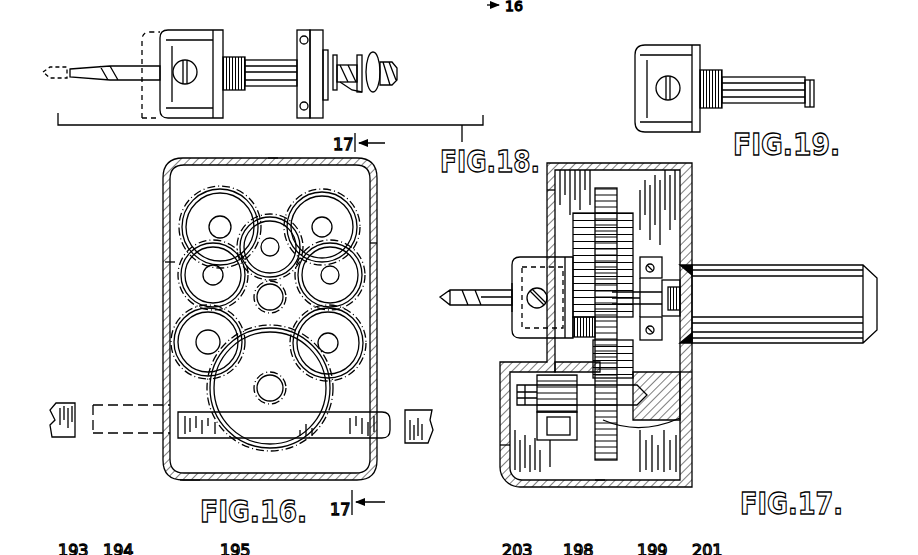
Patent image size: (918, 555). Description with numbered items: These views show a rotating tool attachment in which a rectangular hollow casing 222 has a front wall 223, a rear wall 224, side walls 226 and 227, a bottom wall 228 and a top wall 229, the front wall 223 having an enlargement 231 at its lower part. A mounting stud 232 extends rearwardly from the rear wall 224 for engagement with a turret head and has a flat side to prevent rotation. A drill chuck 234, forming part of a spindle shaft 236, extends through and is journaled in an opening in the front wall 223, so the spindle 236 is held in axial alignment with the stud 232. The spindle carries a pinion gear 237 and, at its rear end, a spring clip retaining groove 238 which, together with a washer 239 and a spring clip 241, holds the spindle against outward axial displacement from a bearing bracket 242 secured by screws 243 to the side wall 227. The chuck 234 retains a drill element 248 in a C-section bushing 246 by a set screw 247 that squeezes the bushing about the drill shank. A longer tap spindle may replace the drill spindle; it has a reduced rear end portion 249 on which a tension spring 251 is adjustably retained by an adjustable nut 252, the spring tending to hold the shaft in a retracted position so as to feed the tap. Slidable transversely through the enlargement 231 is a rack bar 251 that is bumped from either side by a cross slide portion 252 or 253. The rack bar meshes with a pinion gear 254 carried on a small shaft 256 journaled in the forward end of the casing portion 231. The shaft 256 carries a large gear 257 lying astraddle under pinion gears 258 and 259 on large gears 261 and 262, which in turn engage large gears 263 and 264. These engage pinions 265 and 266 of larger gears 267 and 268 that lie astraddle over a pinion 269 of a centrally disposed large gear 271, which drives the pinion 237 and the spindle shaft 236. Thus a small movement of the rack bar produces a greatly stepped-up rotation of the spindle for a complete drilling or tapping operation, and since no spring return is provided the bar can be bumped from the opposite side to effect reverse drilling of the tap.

In FIG. 16, the hollow casing 222 is at (383, 341).
In FIG. 17, the hollow casing 222 is at (698, 456).
In FIG. 17, the front wall 223 is at (545, 198).
In FIG. 17, the rear wall 224 is at (688, 373).
In FIG. 16, the side wall 226 is at (372, 245).
In FIG. 16, the side wall 227 is at (170, 270).
In FIG. 17, the side wall 227 is at (625, 188).
In FIG. 16, the bottom wall 228 is at (200, 480).
In FIG. 17, the bottom wall 228 is at (600, 478).
In FIG. 16, the top wall 229 is at (273, 163).
In FIG. 17, the top wall 229 is at (550, 165).
In FIG. 17, the enlargement 231 is at (507, 447).
In FIG. 17, the mounting stud 232 is at (765, 265).
In FIG. 19, the drill chuck 234 is at (657, 55).
In FIG. 17, the drill chuck 234 is at (530, 257).
In FIG. 18, the spindle shaft 236 is at (270, 82).
In FIG. 19, the spindle shaft 236 is at (748, 88).
In FIG. 18, the pinion gear 237 is at (238, 57).
In FIG. 19, the pinion gear 237 is at (707, 72).
In FIG. 16, the pinion gear 237 is at (208, 277).
In FIG. 17, the pinion gear 237 is at (587, 337).
In FIG. 19, the spring clip retaining groove 238 is at (807, 78).
In FIG. 17, the spring clip retaining groove 238 is at (673, 303).
In FIG. 18, the washer 239 is at (324, 32).
In FIG. 17, the washer 239 is at (662, 282).
In FIG. 17, the spring clip 241 is at (676, 293).
In FIG. 18, the bearing bracket 242 is at (300, 56).
In FIG. 17, the bearing bracket 242 is at (660, 262).
In FIG. 17, the screws 243 is at (653, 333).
In FIG. 17, the bushing 246 is at (522, 283).
In FIG. 19, the set screw 247 is at (658, 90).
In FIG. 17, the set screw 247 is at (530, 305).
In FIG. 18, the drill element 248 is at (118, 65).
In FIG. 17, the drill element 248 is at (483, 292).
In FIG. 18, the reduced rear end portion 249 is at (360, 56).
In FIG. 18, the rack bar 251 is at (355, 90).
In FIG. 16, the rack bar 251 is at (340, 433).
In FIG. 17, the rack bar 251 is at (550, 467).
In FIG. 18, the cross slide portion 252 is at (380, 56).
In FIG. 16, the cross slide portion 252 is at (63, 403).
In FIG. 18, the cross slide portion 253 is at (398, 75).
In FIG. 16, the cross slide portion 253 is at (432, 380).
In FIG. 16, the pinion gear 254 is at (268, 388).
In FIG. 17, the pinion gear 254 is at (545, 414).
In FIG. 16, the small shaft 256 is at (230, 390).
In FIG. 17, the small shaft 256 is at (520, 397).
In FIG. 17, the large gear 257 is at (676, 418).
In FIG. 16, the pinion gear 258 is at (203, 343).
In FIG. 16, the pinion gear 259 is at (330, 343).
In FIG. 16, the large gear 261 is at (190, 322).
In FIG. 16, the large gear 262 is at (340, 323).
In FIG. 16, the large gear 263 is at (190, 265).
In FIG. 16, the large gear 264 is at (347, 273).
In FIG. 16, the pinion 265 is at (207, 210).
In FIG. 16, the pinion 266 is at (325, 227).
In FIG. 16, the larger gear 267 is at (207, 213).
In FIG. 16, the larger gear 268 is at (337, 205).
In FIG. 16, the pinion 269 is at (272, 240).
In FIG. 16, the centrally disposed large gear 271 is at (268, 222).